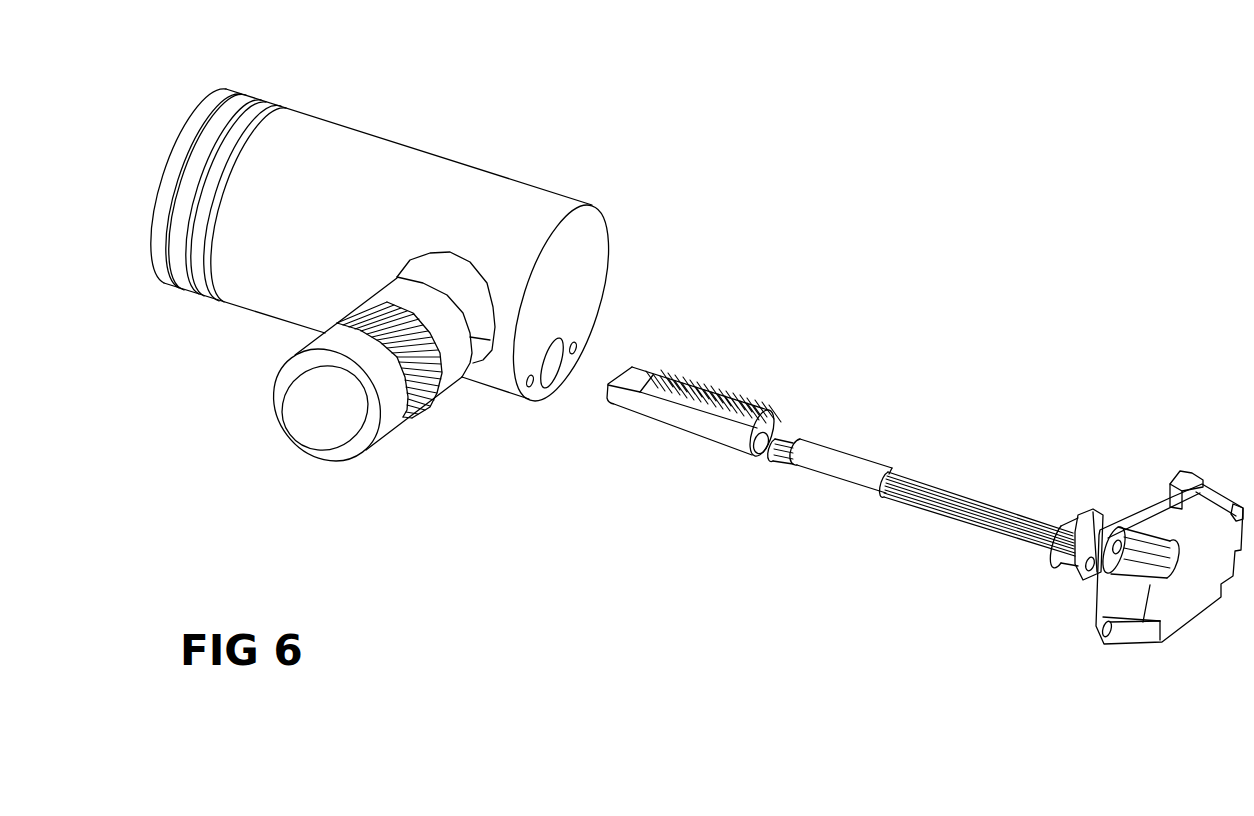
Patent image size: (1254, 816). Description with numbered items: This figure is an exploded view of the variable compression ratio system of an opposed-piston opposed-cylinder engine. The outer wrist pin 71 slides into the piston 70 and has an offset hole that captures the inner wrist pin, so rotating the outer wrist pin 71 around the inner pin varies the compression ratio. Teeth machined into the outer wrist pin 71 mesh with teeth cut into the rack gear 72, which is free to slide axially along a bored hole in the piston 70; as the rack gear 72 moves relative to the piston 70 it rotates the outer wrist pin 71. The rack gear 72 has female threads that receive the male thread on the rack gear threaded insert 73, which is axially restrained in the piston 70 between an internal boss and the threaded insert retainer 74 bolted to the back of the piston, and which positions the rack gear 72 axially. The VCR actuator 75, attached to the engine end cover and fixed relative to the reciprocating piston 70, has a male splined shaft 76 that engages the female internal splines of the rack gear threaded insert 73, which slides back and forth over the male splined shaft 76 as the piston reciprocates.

The piston 70 is at (383, 182).
The outer wrist pin 71 is at (387, 392).
The rack gear 72 is at (628, 378).
The rack gear threaded insert 73 is at (823, 458).
The threaded insert retainer 74 is at (1048, 545).
The VCR actuator 75 is at (1127, 602).
The male splined shaft 76 is at (933, 482).